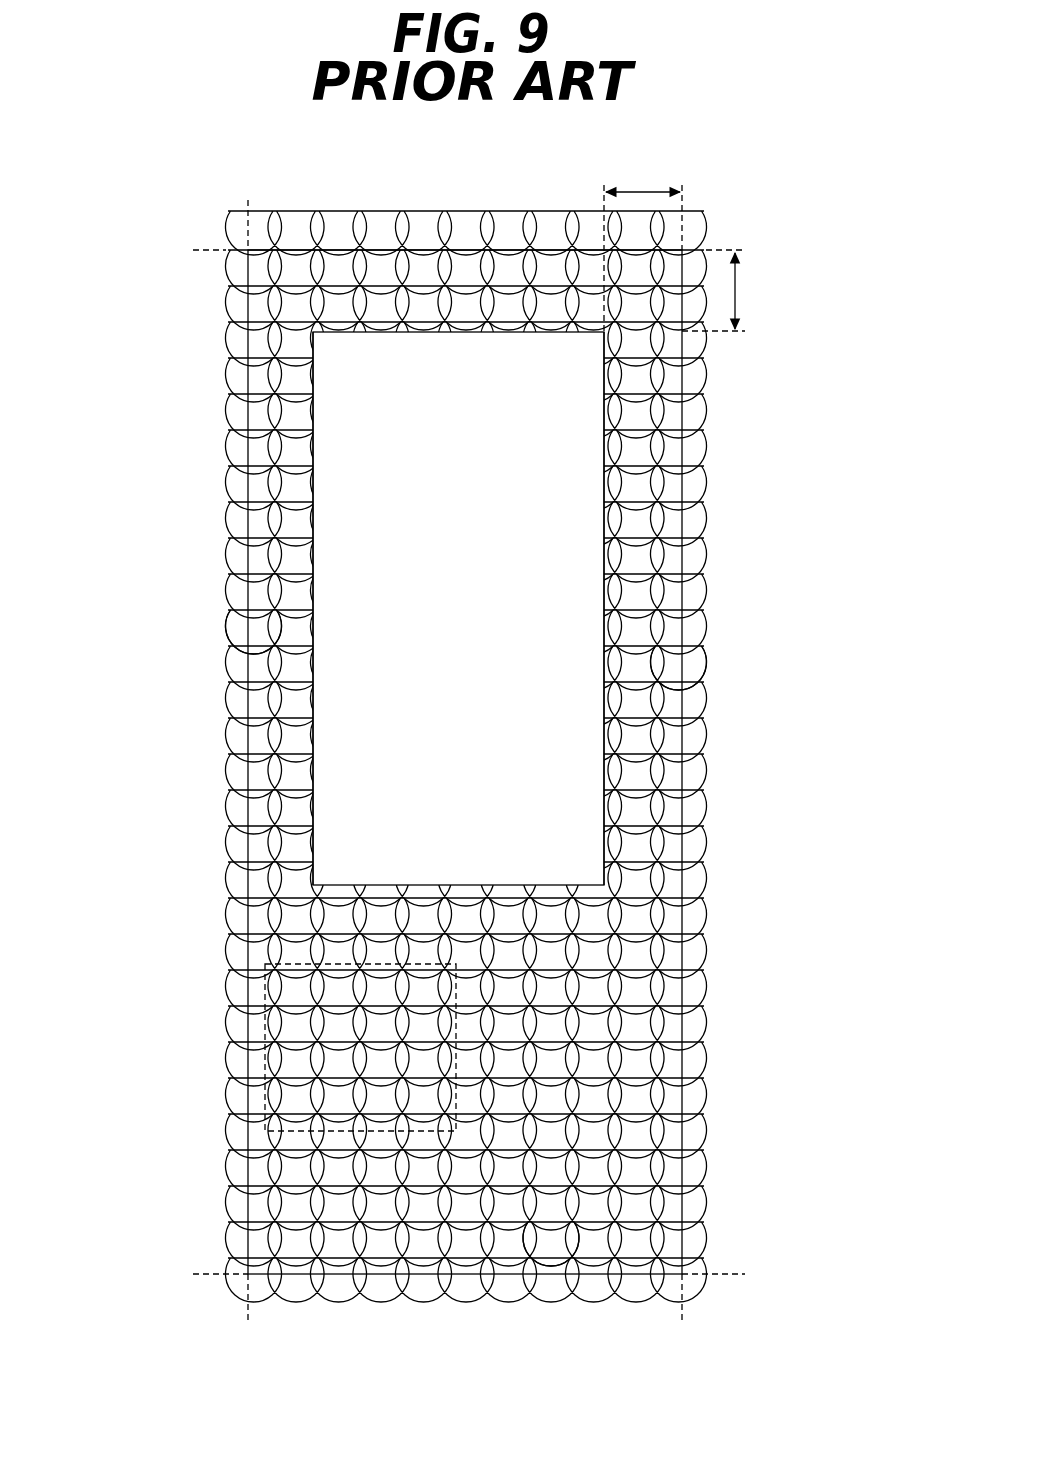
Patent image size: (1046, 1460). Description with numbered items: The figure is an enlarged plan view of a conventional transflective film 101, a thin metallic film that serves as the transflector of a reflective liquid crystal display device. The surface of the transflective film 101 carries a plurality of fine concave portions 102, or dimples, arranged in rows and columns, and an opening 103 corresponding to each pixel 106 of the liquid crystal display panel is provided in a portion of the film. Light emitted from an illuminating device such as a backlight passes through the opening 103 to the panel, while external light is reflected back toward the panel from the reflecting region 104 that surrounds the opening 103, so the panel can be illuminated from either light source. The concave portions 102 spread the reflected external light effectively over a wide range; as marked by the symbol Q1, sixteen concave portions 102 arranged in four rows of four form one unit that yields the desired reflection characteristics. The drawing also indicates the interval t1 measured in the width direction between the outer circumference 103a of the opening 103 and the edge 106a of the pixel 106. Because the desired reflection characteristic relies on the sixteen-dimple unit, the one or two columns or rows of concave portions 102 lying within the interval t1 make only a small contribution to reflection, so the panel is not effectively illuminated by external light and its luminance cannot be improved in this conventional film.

The transflective film 101 is at (762, 805).
The concave portions 102 is at (343, 217).
The opening 103 is at (612, 428).
The outer circumference 103a is at (250, 527).
The reflecting region 104 is at (549, 1247).
The pixel 106 is at (462, 757).
The edge 106a is at (262, 631).
The unit of concave portions Q1 is at (268, 1030).
The interval t1 is at (686, 248).